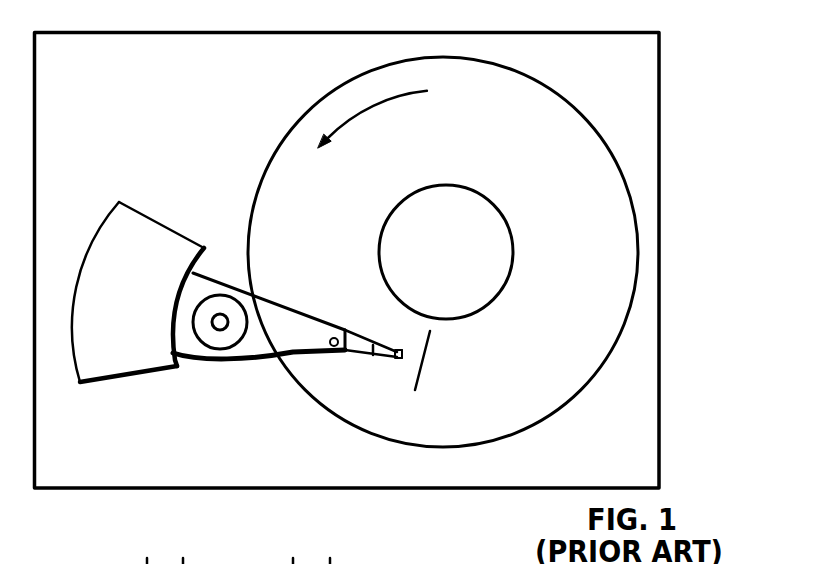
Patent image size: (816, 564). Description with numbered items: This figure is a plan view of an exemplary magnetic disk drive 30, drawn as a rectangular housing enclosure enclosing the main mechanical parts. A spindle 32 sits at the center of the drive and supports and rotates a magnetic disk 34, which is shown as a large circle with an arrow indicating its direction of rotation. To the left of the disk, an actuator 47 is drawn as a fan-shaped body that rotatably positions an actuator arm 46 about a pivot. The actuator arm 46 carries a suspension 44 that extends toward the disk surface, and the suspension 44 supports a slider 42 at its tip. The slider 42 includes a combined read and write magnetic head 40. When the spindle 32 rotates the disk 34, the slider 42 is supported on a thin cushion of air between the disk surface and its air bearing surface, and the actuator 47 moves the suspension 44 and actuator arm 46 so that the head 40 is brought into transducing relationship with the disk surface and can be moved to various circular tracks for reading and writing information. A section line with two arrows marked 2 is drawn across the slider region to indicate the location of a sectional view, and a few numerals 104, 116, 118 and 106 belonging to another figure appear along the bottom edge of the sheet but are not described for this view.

The magnetic disk drive 30 is at (678, 32).
The spindle 32 is at (468, 187).
The magnetic disk 34 is at (570, 254).
The magnetic head 40 is at (402, 358).
The slider 42 is at (402, 343).
The suspension 44 is at (355, 357).
The actuator arm 46 is at (267, 297).
The actuator 47 is at (155, 220).
The section line 2- 2 is at (445, 345).
The element 104 (FIG. 2) 104 is at (144, 544).
The element 116 (FIG. 2) 116 is at (187, 548).
The element 118 (FIG. 2) 118 is at (278, 545).
The element 106 (FIG. 2) 106 is at (328, 548).